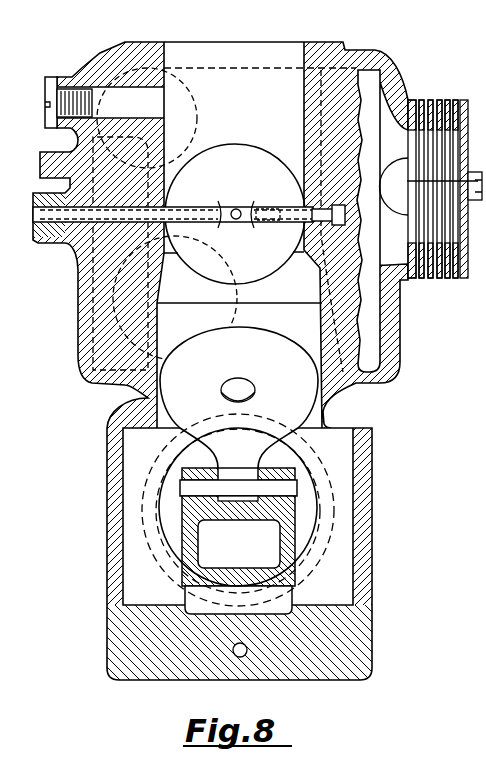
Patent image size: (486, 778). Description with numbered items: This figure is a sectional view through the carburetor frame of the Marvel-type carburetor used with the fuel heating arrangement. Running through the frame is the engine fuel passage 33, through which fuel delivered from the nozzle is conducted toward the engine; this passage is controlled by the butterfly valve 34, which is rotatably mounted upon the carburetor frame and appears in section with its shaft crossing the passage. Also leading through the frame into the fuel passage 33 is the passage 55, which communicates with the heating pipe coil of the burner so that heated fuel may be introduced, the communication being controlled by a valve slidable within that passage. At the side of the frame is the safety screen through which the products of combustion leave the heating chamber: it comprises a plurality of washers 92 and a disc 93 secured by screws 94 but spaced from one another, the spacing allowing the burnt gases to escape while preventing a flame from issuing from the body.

The engine fuel passage 33 is at (256, 63).
The passage 55 is at (173, 112).
The butterfly valve 34 is at (255, 160).
The washers 92 is at (448, 100).
The disc 93 is at (463, 100).
The screws 94 is at (431, 186).